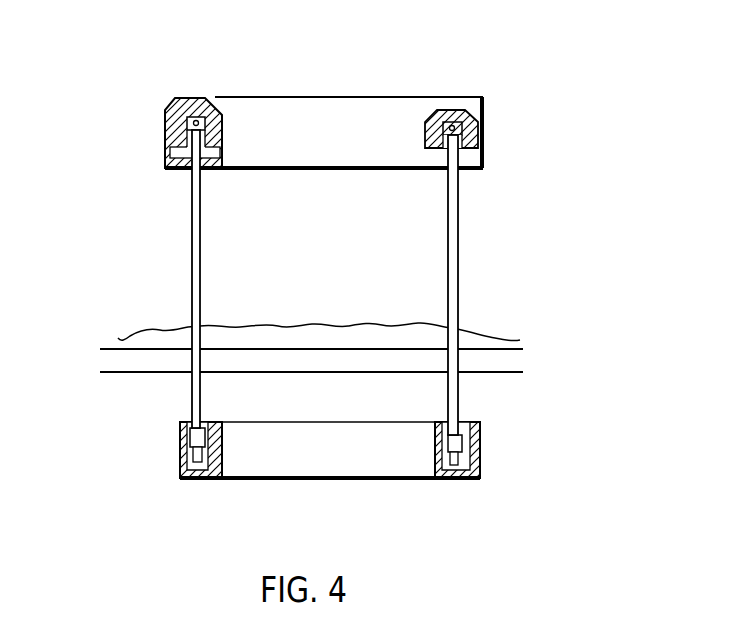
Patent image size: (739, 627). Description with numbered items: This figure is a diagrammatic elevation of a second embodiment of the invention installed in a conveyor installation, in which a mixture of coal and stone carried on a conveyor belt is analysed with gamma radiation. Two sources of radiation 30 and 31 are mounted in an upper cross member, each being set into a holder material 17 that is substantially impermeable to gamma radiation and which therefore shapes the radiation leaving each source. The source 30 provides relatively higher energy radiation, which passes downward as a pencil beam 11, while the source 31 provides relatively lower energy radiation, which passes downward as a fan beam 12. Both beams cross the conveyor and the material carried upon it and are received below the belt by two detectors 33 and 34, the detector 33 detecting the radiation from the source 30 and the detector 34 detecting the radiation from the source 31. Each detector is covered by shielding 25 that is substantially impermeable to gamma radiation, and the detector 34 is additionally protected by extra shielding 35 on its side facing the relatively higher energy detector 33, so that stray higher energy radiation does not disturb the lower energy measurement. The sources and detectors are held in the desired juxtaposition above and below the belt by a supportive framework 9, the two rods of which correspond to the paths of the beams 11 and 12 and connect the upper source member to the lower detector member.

The supportive framework 9 is at (332, 458).
The pencil beam 11 is at (195, 283).
The fan beam 12 is at (452, 283).
The holder material 17 is at (218, 118).
The shielding 25 is at (225, 480).
The source 30 is at (167, 117).
The source 31 is at (480, 128).
The detector 33 is at (172, 455).
The detector 34 is at (480, 447).
The extra shielding 35 is at (436, 427).